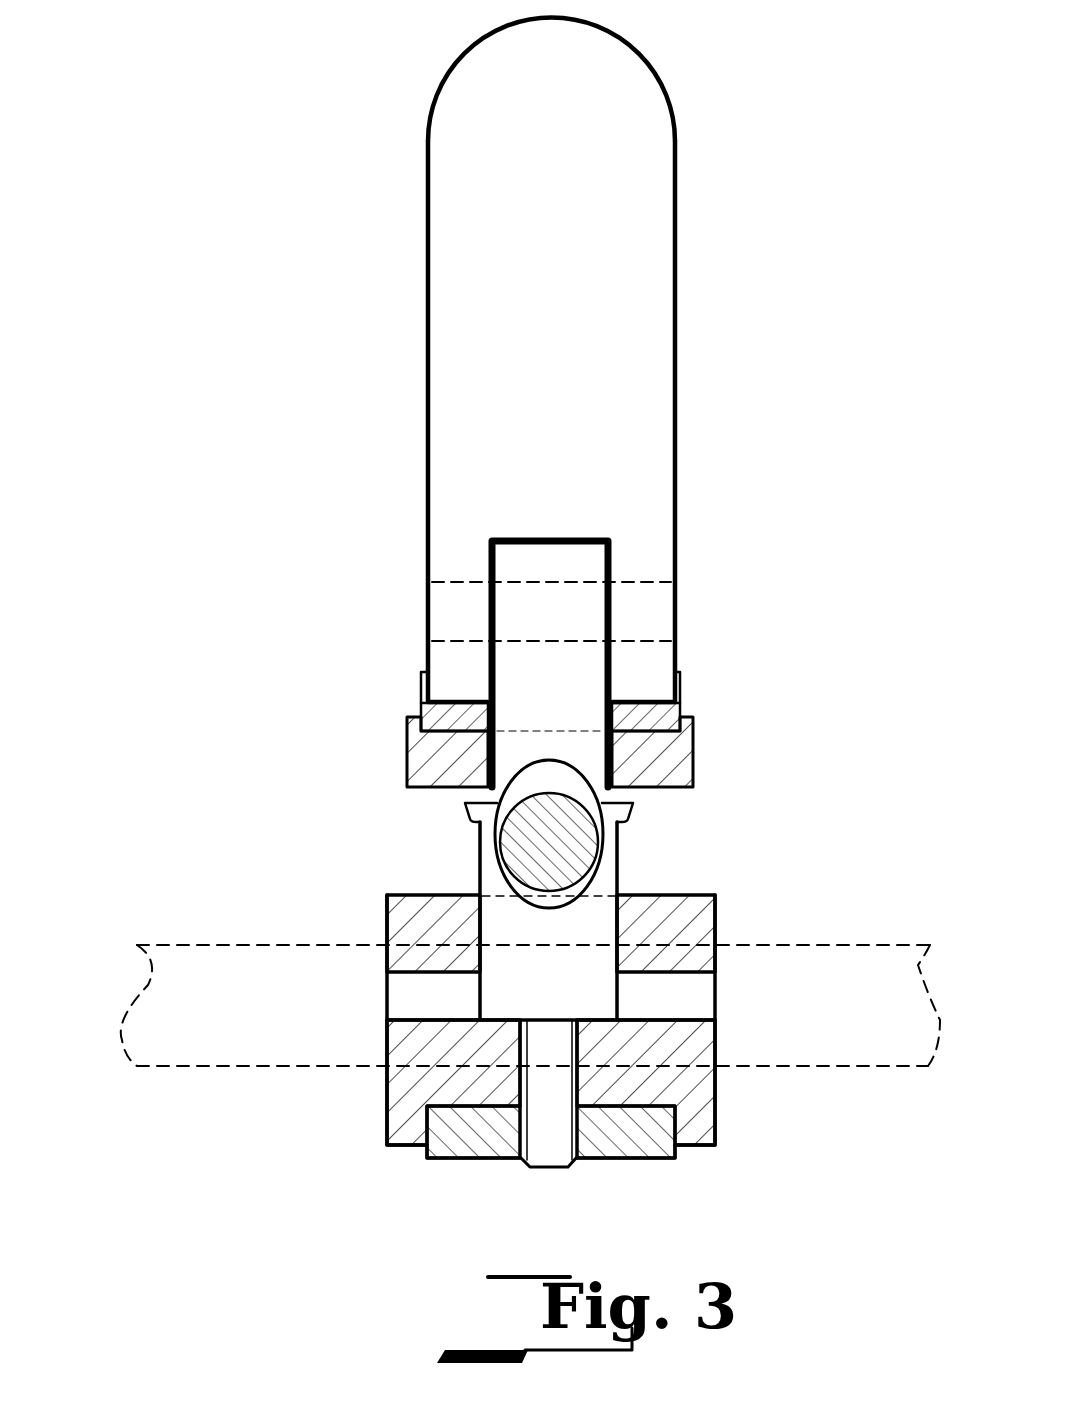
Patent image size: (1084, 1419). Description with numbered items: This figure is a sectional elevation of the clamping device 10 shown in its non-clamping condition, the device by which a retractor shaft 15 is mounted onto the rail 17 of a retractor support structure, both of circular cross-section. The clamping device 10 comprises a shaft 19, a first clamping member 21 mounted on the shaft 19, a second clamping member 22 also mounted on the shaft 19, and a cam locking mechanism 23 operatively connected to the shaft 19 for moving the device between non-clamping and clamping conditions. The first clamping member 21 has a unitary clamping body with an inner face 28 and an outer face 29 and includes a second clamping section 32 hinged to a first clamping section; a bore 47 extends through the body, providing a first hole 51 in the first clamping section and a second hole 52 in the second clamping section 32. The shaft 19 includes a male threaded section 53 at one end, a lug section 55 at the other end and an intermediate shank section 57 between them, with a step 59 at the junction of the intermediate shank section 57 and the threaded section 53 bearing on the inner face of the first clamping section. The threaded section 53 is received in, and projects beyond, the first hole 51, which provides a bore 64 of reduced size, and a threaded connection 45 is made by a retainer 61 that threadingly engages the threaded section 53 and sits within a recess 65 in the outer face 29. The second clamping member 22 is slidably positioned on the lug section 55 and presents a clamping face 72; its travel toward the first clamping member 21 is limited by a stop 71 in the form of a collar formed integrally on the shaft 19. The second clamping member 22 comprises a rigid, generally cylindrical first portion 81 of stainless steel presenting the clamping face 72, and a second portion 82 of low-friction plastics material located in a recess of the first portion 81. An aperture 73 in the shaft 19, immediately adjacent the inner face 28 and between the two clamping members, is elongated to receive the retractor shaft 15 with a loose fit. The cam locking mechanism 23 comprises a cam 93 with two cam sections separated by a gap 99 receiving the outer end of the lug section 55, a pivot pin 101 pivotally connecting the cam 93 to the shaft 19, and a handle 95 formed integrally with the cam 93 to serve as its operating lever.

The handle 95 is at (636, 280).
The cam locking mechanism 23 is at (647, 397).
The gap 99 is at (578, 538).
The pivot pin 101 is at (626, 598).
The lug section 55 is at (563, 677).
The cam 93 is at (428, 650).
The second portion 82 is at (677, 705).
The second clamping member 22 is at (407, 745).
The clamping device 10 is at (407, 775).
The first portion 81 is at (695, 758).
The clamping face 72 is at (412, 790).
The stop 71 is at (630, 823).
The aperture 73 is at (480, 826).
The retractor shaft 15 is at (576, 852).
The shaft 19 is at (621, 873).
The intermediate shank section 57 is at (492, 888).
The rail 17 is at (883, 943).
The second hole 52 is at (480, 918).
The inner face 28 is at (700, 893).
The second clamping section 32 is at (386, 935).
The step 59 is at (590, 1018).
The first clamping member 21 is at (388, 1042).
The bore 47 is at (477, 948).
The first hole 51 is at (580, 1088).
The recess 65 is at (688, 1120).
The outer face 29 is at (403, 1148).
The bore 64 is at (512, 1078).
The male threaded section 53 is at (532, 1130).
The retainer 61 is at (607, 1160).
The threaded connection 45 is at (636, 1160).